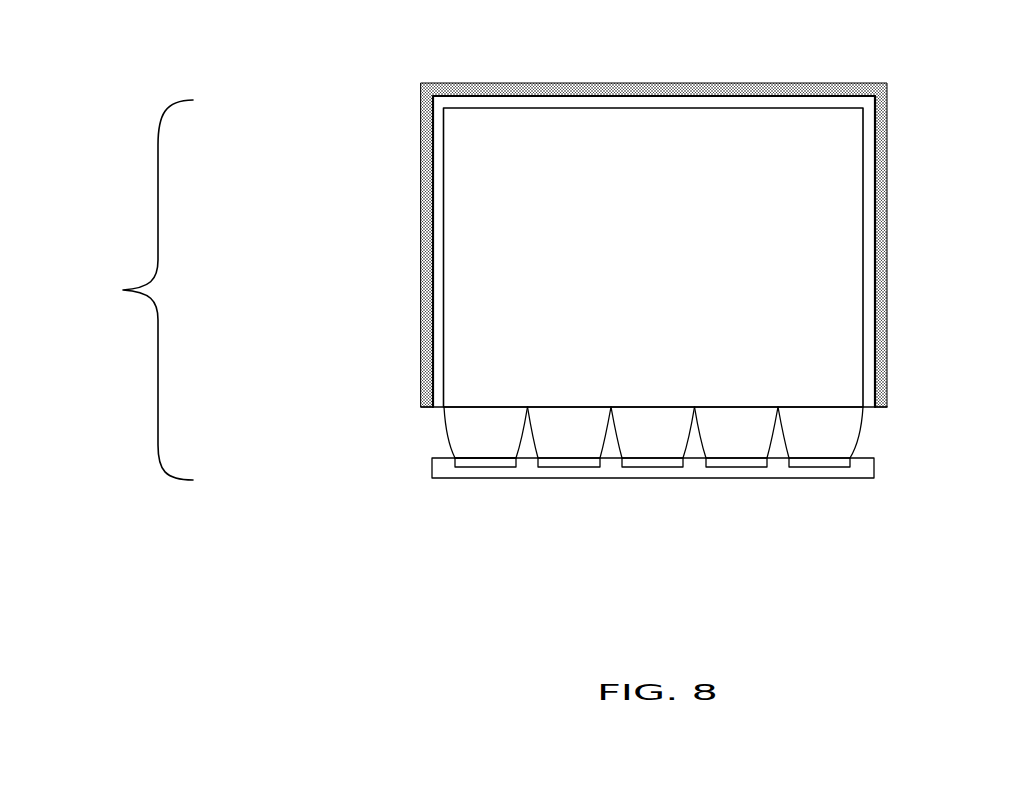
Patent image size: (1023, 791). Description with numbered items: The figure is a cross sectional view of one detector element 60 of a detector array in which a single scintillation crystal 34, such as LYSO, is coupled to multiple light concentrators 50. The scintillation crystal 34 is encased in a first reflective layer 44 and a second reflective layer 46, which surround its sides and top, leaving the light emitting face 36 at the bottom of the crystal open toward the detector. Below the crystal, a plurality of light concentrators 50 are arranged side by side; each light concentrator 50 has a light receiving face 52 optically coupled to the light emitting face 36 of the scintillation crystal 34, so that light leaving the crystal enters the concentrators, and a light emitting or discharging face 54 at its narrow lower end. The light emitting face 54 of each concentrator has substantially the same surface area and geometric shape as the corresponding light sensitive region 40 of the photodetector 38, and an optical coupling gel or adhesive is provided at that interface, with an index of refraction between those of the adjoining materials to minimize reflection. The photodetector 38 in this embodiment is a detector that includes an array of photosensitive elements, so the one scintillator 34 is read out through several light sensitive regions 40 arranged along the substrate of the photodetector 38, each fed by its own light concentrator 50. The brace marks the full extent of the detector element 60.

The scintillation crystal 34 is at (459, 248).
The light emitting face 36 is at (463, 407).
The photodetector 38 is at (517, 467).
The light sensitive region 40 is at (480, 463).
The first reflective layer 44 is at (484, 103).
The second reflective layer 46 is at (765, 83).
The light concentrator 50 is at (860, 410).
The light receiving face 52 is at (640, 407).
The light emitting face 54 is at (513, 458).
The detector element 60 is at (123, 290).